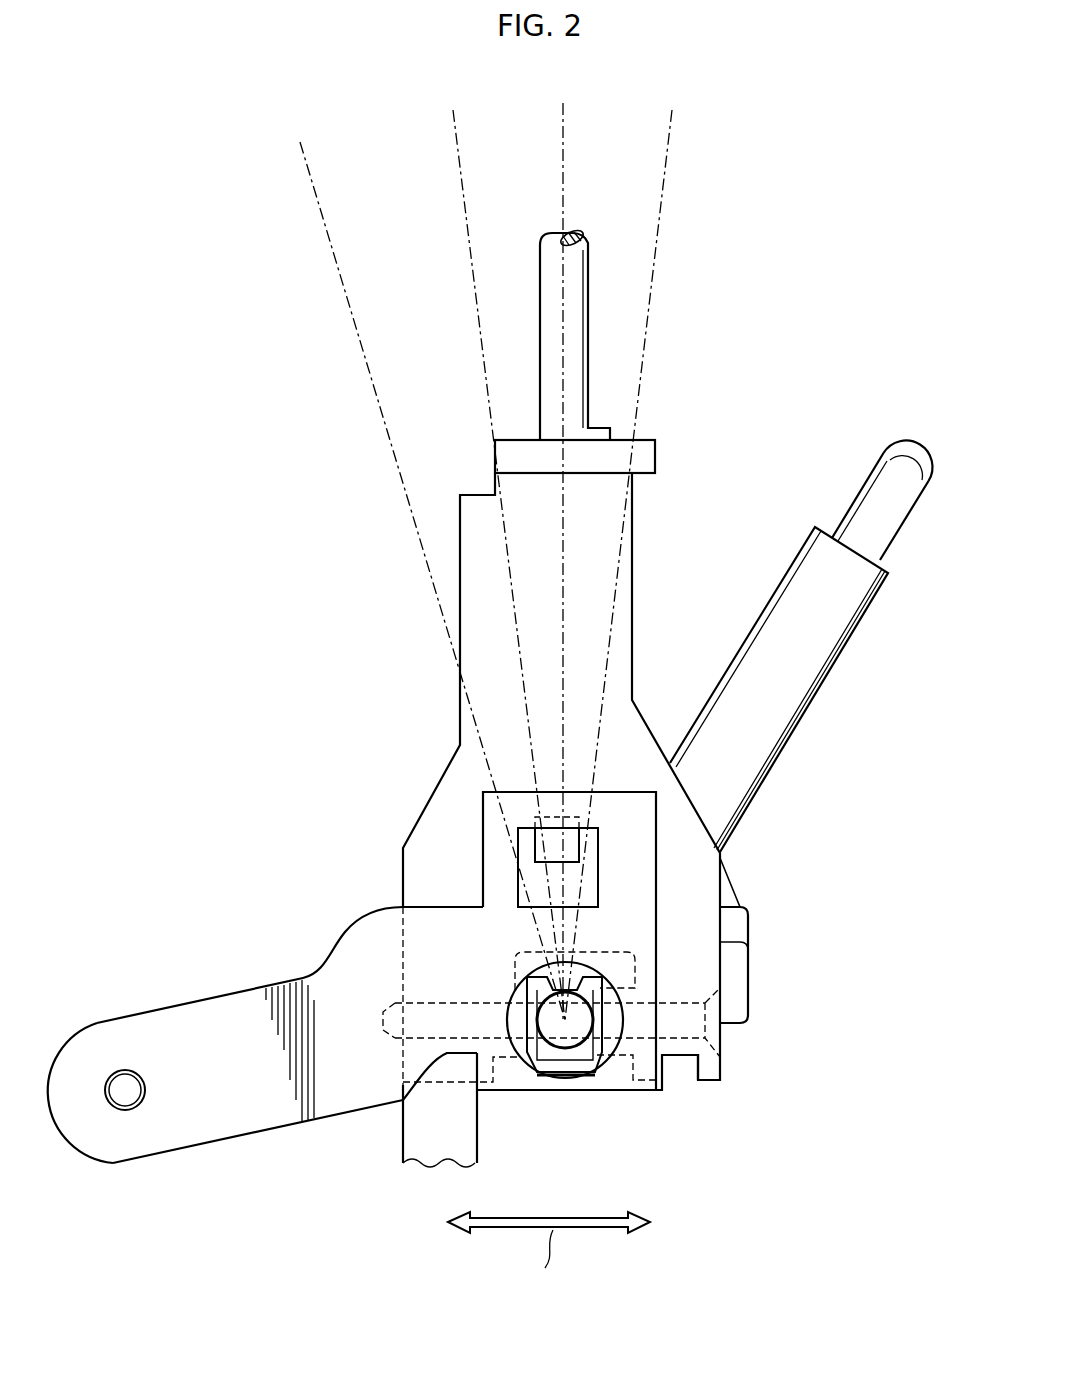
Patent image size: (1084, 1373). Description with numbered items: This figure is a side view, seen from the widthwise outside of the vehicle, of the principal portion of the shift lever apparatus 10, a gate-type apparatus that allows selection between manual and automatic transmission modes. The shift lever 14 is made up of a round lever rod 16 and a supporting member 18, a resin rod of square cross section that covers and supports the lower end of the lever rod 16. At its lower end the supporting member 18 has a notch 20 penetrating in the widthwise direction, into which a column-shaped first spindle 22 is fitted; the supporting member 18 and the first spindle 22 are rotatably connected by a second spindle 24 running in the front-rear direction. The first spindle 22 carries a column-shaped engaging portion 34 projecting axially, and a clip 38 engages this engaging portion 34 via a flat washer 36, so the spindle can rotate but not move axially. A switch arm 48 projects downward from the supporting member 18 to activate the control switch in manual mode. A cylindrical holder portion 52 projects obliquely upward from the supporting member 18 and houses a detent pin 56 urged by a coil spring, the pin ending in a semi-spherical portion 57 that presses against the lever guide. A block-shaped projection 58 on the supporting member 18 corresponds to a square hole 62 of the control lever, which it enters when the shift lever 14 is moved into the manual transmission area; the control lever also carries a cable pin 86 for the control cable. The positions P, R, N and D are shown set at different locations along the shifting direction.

The shift lever apparatus 10 is at (697, 297).
The shift lever 14 is at (655, 512).
The lever rod 16 is at (577, 288).
The supporting member 18 is at (402, 845).
The notch 20 is at (623, 1067).
The first spindle 22 is at (545, 1058).
The second spindle 24 is at (672, 1043).
The engaging portion 34 is at (572, 1037).
The flat washer 36 is at (535, 962).
The clip 38 is at (530, 1010).
The switch arm 48 is at (413, 1135).
The holder portion 52 is at (816, 692).
The detent pin 56 is at (890, 547).
The semi-spherical portion 57 is at (897, 447).
The projection 58 is at (575, 847).
The hole 62 is at (530, 884).
The cable pin 86 is at (122, 1083).